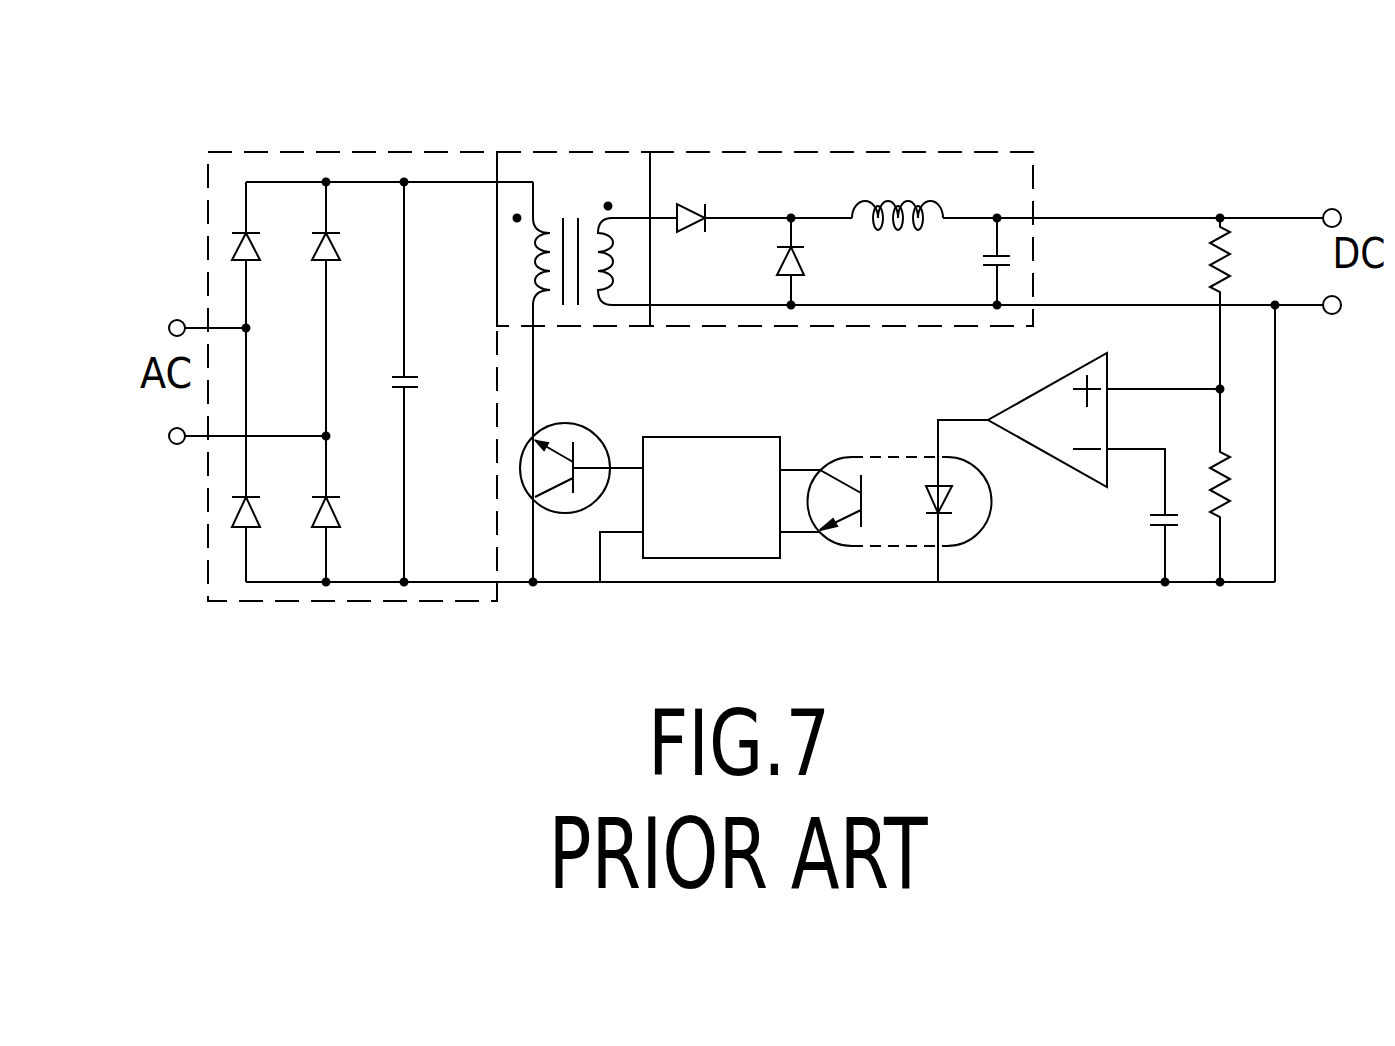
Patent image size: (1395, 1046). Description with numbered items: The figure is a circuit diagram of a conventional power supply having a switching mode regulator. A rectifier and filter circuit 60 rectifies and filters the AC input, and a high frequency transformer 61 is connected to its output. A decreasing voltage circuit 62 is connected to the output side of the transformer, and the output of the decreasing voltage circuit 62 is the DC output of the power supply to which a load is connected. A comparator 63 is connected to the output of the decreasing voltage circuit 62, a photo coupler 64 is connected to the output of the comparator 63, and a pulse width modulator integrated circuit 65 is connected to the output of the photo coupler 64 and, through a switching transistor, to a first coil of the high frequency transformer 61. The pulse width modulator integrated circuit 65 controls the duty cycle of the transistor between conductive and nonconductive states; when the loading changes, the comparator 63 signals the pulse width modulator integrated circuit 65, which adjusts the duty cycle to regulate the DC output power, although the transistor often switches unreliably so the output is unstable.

The rectifier and filter circuit 60 is at (328, 152).
The high frequency transformer 61 is at (563, 152).
The decreasing voltage circuit 62 is at (910, 150).
The comparator 63 is at (1090, 497).
The photo coupler 64 is at (895, 546).
The PWM IC (pulse width modulator) 65 is at (713, 558).